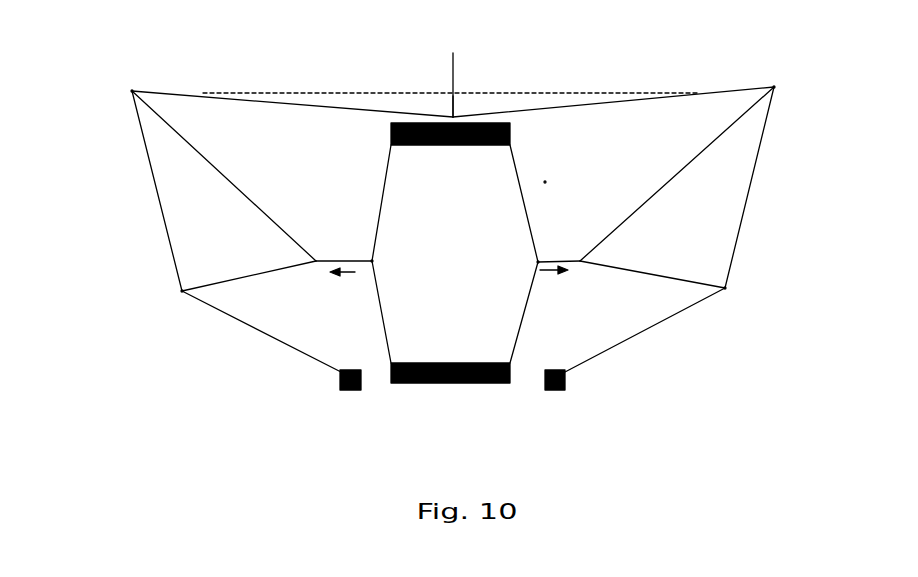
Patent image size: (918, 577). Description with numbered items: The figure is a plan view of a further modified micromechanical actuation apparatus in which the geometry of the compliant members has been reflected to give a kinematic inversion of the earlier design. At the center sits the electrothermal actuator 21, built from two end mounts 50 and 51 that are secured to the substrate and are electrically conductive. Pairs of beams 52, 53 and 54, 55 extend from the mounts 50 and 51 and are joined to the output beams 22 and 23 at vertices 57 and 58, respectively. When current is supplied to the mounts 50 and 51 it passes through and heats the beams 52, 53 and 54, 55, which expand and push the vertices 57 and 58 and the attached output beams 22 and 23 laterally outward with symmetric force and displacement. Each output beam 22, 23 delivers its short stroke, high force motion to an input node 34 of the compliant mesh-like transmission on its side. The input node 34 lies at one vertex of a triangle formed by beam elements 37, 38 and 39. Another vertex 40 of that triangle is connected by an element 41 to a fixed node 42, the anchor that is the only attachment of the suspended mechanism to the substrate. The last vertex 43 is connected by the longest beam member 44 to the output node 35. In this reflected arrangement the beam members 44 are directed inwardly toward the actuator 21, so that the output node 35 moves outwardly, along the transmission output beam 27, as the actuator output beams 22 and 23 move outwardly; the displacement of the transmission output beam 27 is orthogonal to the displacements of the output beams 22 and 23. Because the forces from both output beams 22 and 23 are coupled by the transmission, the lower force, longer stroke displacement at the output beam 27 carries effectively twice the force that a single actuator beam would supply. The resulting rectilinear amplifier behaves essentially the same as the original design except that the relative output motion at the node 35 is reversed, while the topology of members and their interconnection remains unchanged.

The actuator 21 is at (552, 178).
The output beam 22 is at (580, 264).
The output beam 23 is at (333, 257).
The transmission output beam 27 is at (452, 102).
The input node 34 is at (317, 263).
The output node 35 is at (453, 115).
The beam element 37 is at (205, 153).
The beam element 38 is at (148, 170).
The beam element 39 is at (217, 282).
The vertex 40 is at (182, 291).
The element 41 is at (253, 328).
The fixed node 42 is at (340, 387).
The vertex 43 is at (130, 92).
The beam member 44 is at (272, 103).
The end mount 50 is at (510, 125).
The end mount 51 is at (460, 383).
The beam 52 is at (517, 187).
The beam 53 is at (517, 337).
The beam 54 is at (388, 175).
The beam 55 is at (383, 318).
The vertex 57 is at (538, 262).
The vertex 58 is at (373, 259).